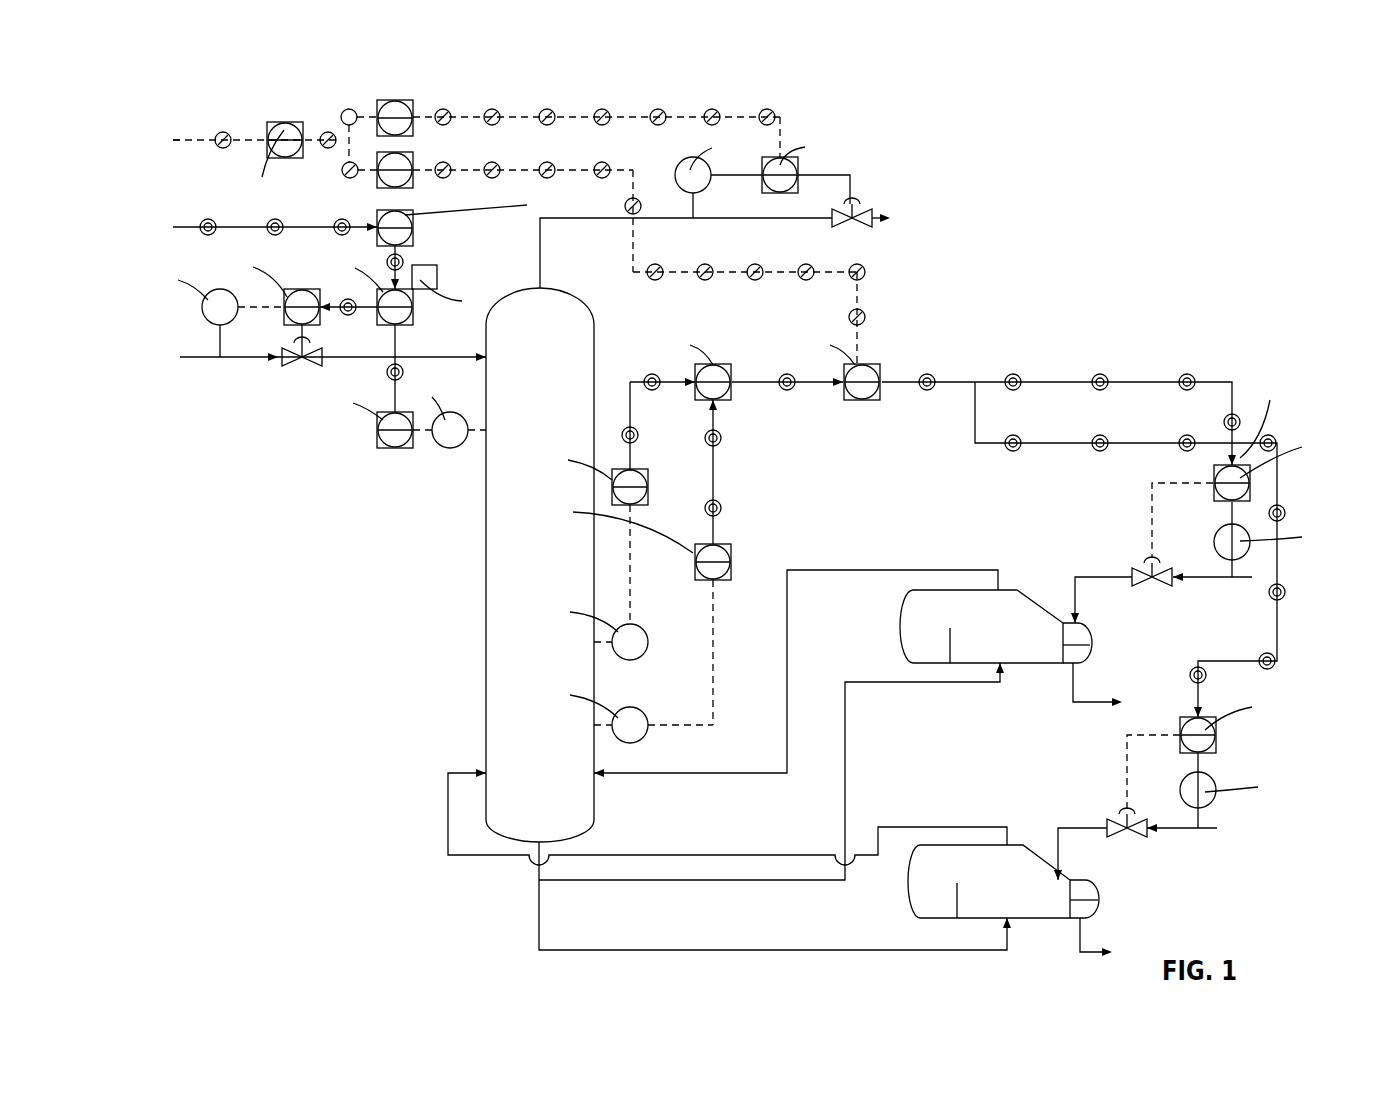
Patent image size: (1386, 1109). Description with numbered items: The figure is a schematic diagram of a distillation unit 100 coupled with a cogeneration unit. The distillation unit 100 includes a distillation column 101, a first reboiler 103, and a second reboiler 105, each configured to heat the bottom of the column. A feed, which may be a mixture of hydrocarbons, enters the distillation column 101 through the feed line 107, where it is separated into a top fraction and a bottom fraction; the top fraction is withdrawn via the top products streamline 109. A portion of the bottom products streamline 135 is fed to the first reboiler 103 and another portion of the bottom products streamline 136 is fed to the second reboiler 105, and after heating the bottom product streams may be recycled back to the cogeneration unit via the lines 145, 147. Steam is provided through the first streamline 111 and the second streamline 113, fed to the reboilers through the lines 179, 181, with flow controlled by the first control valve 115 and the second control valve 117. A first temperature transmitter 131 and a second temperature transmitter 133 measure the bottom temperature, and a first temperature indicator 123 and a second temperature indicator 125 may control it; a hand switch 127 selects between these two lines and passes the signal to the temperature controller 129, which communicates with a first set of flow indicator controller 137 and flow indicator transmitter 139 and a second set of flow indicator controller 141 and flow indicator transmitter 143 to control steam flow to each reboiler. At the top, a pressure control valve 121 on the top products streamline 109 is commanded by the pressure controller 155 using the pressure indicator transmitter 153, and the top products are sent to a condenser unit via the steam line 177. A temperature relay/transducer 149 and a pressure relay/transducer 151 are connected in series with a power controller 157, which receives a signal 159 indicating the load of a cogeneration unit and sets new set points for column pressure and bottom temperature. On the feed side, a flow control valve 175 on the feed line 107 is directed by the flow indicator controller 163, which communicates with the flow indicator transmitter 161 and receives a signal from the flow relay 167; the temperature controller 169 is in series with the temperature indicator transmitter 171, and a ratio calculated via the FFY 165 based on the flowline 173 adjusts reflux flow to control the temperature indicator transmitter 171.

The distillation unit 100 is at (1104, 236).
The distillation column 101 is at (485, 567).
The first reboiler 103 is at (912, 628).
The second reboiler 105 is at (920, 885).
The feed line 107 is at (413, 356).
The top products streamline 109 is at (597, 220).
The first streamline 111 is at (1102, 577).
The second streamline 113 is at (1068, 827).
The first control valve 115 is at (1157, 583).
The second control valve 117 is at (1112, 835).
The pressure control valve 121 is at (842, 223).
The first temperature indicator 123 is at (632, 497).
The second temperature indicator 125 is at (716, 570).
The hand switch 127 is at (718, 393).
The temperature controller 129 is at (865, 393).
The first temperature transmitter 131 is at (635, 650).
The second temperature transmitter 133 is at (635, 733).
The bottom products streamline 135 is at (648, 948).
The bottom products streamline 136 is at (845, 823).
The flow indicator controller 137 is at (1250, 485).
The flow indicator transmitter 139 is at (1248, 555).
The flow indicator controller 141 is at (1205, 742).
The flow indicator transmitter 143 is at (1208, 802).
The line 145 is at (785, 692).
The line 147 is at (690, 852).
The temperature relay/transducer 149 is at (445, 140).
The pressure relay/transducer 151 is at (444, 88).
The pressure indicator transmitter 153 is at (685, 170).
The pressure controller 155 is at (775, 185).
The power controller 157 is at (287, 132).
The signal 159 is at (175, 142).
The flow indicator transmitter 161 is at (208, 315).
The flow indicator controller 163 is at (304, 294).
The FFY 165 is at (412, 235).
The flow relay 167 is at (398, 292).
The temperature controller 169 is at (392, 448).
The temperature indicator transmitter 171 is at (453, 447).
The flowline 173 is at (178, 226).
The flow control valve 175 is at (303, 368).
The steam line 177 is at (880, 212).
The line 179 is at (1218, 580).
The line 181 is at (1225, 830).